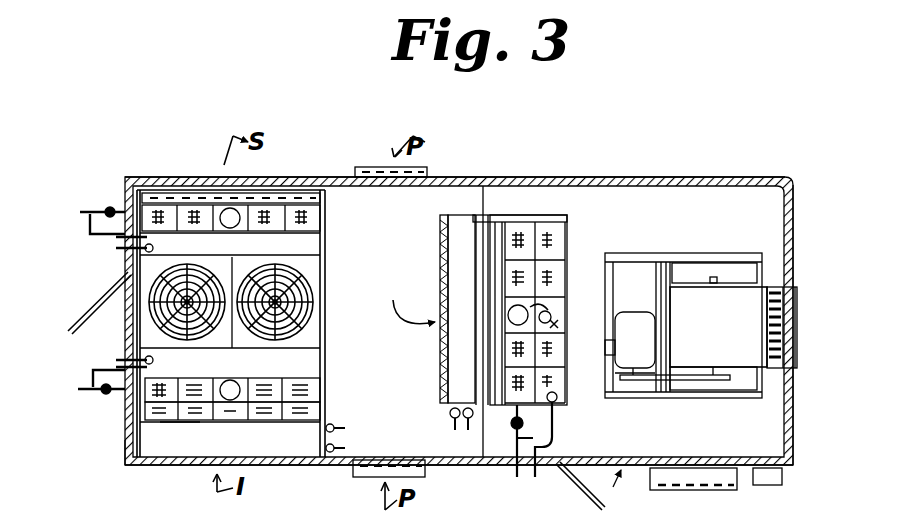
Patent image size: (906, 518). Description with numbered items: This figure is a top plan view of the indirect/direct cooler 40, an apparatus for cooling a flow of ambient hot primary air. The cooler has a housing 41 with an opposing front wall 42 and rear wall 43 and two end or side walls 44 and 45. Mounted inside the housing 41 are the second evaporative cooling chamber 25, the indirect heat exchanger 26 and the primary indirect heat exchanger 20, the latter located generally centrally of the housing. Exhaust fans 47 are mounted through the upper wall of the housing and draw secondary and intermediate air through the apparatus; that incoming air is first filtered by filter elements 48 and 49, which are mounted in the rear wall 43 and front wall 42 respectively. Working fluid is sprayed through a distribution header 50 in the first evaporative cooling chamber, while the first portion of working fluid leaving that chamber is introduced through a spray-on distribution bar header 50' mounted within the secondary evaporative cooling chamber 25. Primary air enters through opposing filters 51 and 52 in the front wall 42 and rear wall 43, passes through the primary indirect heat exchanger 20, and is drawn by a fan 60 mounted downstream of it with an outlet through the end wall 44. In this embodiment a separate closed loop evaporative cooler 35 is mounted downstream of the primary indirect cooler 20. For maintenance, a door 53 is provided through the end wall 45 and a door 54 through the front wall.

The primary indirect heat exchanger 20 is at (446, 212).
The second evaporative cooling chamber 25 is at (152, 388).
The indirect heat exchanger 26 is at (183, 442).
The closed loop evaporative cooler 35 is at (522, 213).
The indirect/direct cooler 40 is at (116, 470).
The housing 41 is at (803, 148).
The front wall 42 is at (506, 462).
The rear wall 43 is at (681, 160).
The side wall 44 is at (795, 398).
The side wall 45 is at (120, 253).
The exhaust fans 47 is at (305, 318).
The filter element 48 is at (183, 160).
The filter element 49 is at (284, 460).
The distribution header 50 is at (231, 187).
The distribution bar header 50' is at (187, 419).
The filter 51 is at (395, 463).
The filter 52 is at (375, 160).
The door 53 is at (120, 338).
The door 54 is at (580, 490).
The fan 60 is at (736, 340).